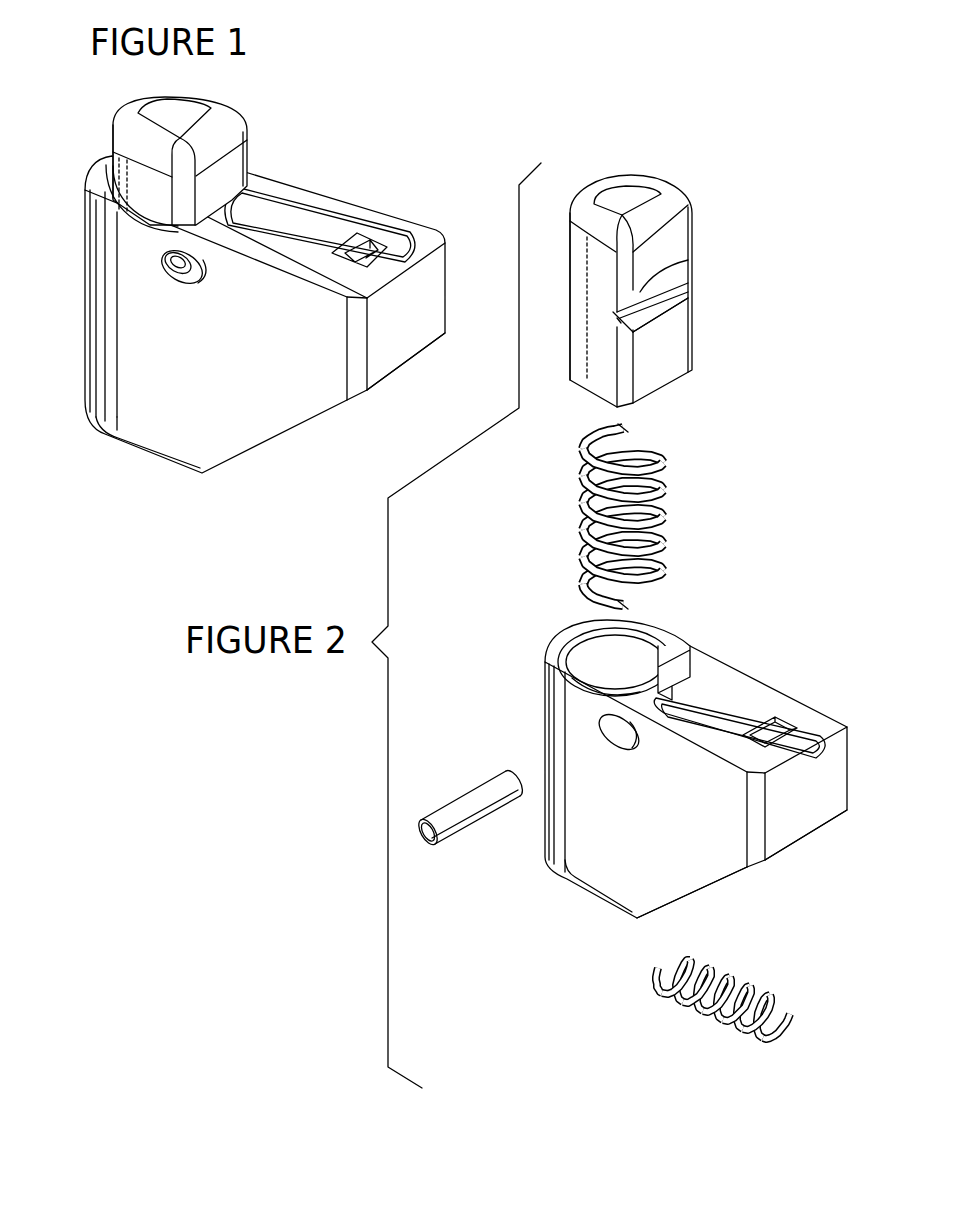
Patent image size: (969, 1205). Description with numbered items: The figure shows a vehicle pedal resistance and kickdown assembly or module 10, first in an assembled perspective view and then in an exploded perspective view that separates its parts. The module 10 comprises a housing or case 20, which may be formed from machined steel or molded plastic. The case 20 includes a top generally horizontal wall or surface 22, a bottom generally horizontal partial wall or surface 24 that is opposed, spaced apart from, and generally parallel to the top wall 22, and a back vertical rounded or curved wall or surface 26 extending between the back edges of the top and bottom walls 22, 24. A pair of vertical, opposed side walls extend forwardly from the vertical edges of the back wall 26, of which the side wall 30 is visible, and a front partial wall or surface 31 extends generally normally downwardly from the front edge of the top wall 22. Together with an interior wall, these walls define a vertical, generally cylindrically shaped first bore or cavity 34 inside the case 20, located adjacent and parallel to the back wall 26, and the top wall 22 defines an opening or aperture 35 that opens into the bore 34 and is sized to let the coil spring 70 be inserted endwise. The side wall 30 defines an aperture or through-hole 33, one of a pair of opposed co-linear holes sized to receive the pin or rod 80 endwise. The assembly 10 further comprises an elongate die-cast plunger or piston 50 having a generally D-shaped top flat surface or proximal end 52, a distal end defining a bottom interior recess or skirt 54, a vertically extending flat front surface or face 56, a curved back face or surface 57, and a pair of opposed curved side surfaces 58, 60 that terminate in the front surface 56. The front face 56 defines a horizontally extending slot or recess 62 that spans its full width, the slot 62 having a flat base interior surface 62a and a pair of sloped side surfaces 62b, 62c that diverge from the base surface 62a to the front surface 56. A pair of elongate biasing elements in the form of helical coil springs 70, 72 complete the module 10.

In FIG. 1, the vehicle pedal resistance and kickdown assembly or module 10 is at (376, 148).
In FIG. 2, the vehicle pedal resistance and kickdown assembly or module 10 is at (847, 392).
In FIG. 1, the housing or case 20 is at (388, 207).
In FIG. 2, the housing or case 20 is at (746, 667).
In FIG. 1, the top generally horizontal wall or surface 22 is at (407, 240).
In FIG. 2, the top generally horizontal wall or surface 22 is at (808, 712).
In FIG. 1, the bottom generally horizontal partial wall or surface 24 is at (152, 458).
In FIG. 2, the bottom generally horizontal partial wall or surface 24 is at (585, 893).
In FIG. 1, the back vertical rounded or curved wall or surface 26 is at (85, 252).
In FIG. 2, the back vertical rounded or curved wall or surface 26 is at (545, 718).
In FIG. 1, the side wall or surface 30 is at (170, 344).
In FIG. 2, the side wall or surface 30 is at (612, 822).
In FIG. 1, the front partial wall or surface 31 is at (403, 330).
In FIG. 2, the front partial wall or surface 31 is at (800, 820).
In FIG. 1, the aperture or through-hole 33 is at (163, 268).
In FIG. 2, the aperture or through-hole 33 is at (600, 728).
In FIG. 2, the first bore or cavity 34 is at (637, 660).
In FIG. 2, the opening or aperture 35 is at (680, 642).
In FIG. 1, the plunger or piston 50 is at (230, 102).
In FIG. 2, the plunger or piston 50 is at (662, 177).
In FIG. 1, the top flat surface or proximal end 52 is at (160, 110).
In FIG. 2, the top flat surface or proximal end 52 is at (628, 185).
In FIG. 2, the bottom interior recess or cavity or skirt 54 is at (682, 343).
In FIG. 1, the flat front surface or face 56 is at (232, 162).
In FIG. 2, the flat front surface or face 56 is at (680, 258).
In FIG. 1, the curved back face or surface 57 is at (108, 170).
In FIG. 2, the curved back face or surface 57 is at (568, 290).
In FIG. 1, the side surface 58 is at (147, 195).
In FIG. 2, the side surface 58 is at (600, 283).
In FIG. 1, the side surface 60 is at (248, 147).
In FIG. 2, the side surface 60 is at (695, 228).
In FIG. 2, the slot or recess 62 is at (690, 285).
In FIG. 2, the flat base interior surface 62a is at (617, 313).
In FIG. 2, the sloped or angled side surface 62b is at (648, 295).
In FIG. 2, the sloped or angled side surface 62c is at (660, 310).
In FIG. 2, the helical coil spring 70 is at (670, 488).
In FIG. 2, the helical coil spring 72 is at (742, 975).
In FIG. 1, the pin or rod 80 is at (178, 262).
In FIG. 2, the pin or rod 80 is at (420, 840).